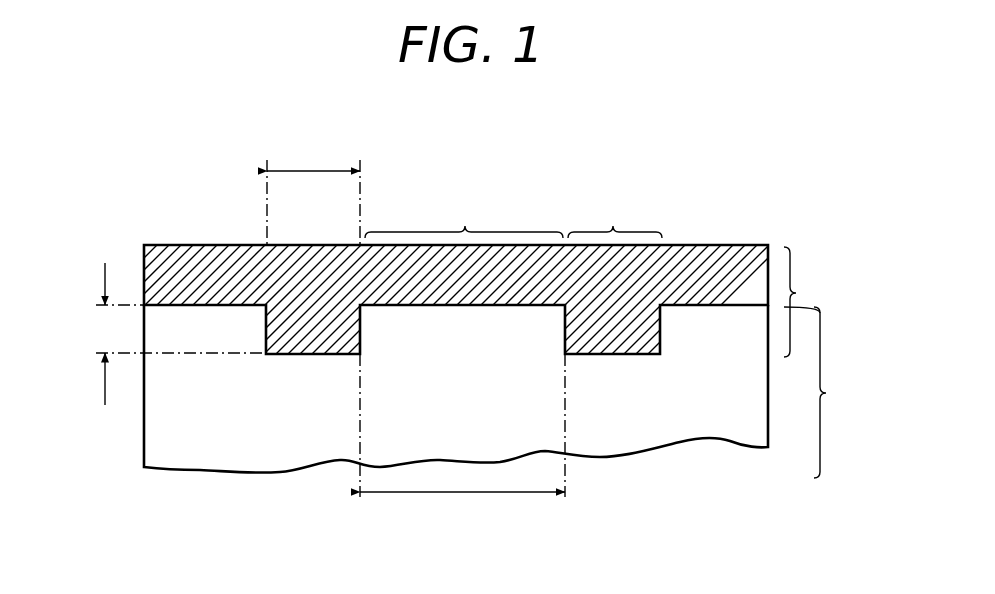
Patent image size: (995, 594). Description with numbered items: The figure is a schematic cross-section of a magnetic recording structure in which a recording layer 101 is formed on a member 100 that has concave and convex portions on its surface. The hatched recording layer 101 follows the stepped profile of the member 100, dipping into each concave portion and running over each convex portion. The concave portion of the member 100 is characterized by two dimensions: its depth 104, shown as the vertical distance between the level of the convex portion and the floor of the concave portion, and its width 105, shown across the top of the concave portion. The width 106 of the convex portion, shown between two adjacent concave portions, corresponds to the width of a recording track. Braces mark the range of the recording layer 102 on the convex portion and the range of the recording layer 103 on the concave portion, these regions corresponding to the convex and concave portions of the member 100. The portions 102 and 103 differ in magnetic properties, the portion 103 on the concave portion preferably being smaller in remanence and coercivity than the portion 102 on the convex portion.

The member with concave and convex portions 100 is at (830, 393).
The recording layer 101 is at (800, 292).
The recording layer on the convex portion 102 is at (465, 222).
The recording layer on the concave portion 103 is at (613, 222).
The depth of the concave portion 104 is at (105, 330).
The width of the concave portion 105 is at (313, 171).
The width of the convex portion 106 is at (458, 492).